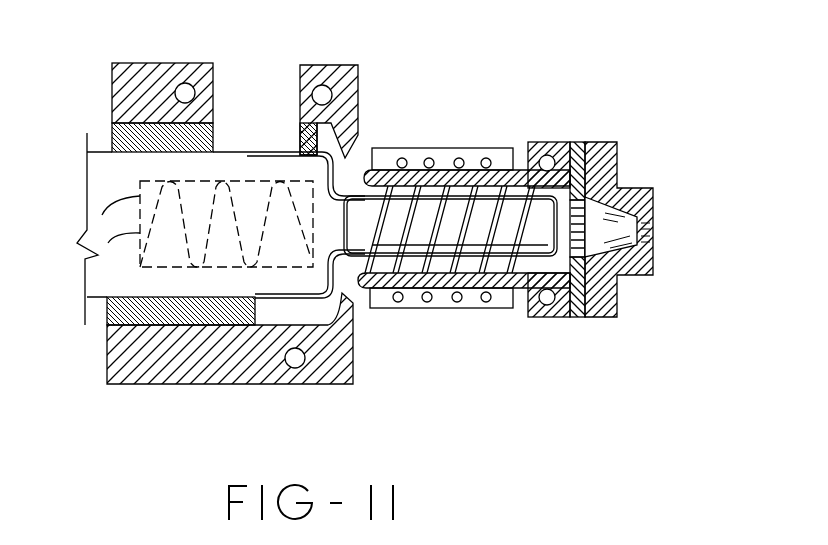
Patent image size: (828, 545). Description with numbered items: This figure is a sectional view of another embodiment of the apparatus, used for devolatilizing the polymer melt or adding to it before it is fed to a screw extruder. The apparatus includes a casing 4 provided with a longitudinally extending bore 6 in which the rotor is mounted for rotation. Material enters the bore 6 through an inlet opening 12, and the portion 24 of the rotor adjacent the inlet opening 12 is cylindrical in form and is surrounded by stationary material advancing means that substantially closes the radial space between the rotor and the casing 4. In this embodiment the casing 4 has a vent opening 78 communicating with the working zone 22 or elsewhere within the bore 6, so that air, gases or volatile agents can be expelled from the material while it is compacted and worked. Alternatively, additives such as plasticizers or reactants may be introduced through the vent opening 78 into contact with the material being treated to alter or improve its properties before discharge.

The casing 4 is at (115, 73).
The inlet opening 12 is at (247, 108).
The portion of the rotor 24 is at (105, 277).
The vent opening 78 is at (365, 150).
The working zone 22 is at (481, 190).
The bore 6 is at (442, 262).